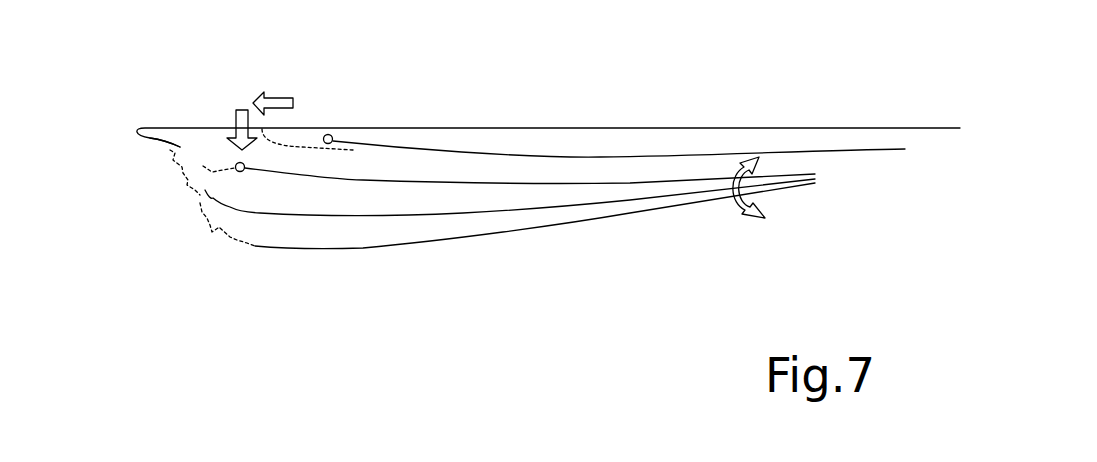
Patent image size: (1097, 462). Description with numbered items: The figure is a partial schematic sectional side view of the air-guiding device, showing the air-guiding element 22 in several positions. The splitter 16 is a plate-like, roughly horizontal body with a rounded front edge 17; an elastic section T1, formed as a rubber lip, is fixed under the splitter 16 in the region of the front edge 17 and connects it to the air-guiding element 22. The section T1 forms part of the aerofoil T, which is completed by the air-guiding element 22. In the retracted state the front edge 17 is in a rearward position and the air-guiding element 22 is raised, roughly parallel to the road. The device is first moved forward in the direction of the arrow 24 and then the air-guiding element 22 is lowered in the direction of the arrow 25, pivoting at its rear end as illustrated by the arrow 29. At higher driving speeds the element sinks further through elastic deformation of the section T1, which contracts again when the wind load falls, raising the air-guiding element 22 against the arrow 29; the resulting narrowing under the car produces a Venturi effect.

The splitter 16 is at (503, 127).
The front edge 17 is at (134, 131).
The air-guiding element 22 is at (603, 155).
The arrow 24 is at (277, 97).
The arrow 25 is at (236, 111).
The arrow 29 is at (750, 221).
The aerofoil T is at (342, 221).
The elastic section T1 is at (210, 167).